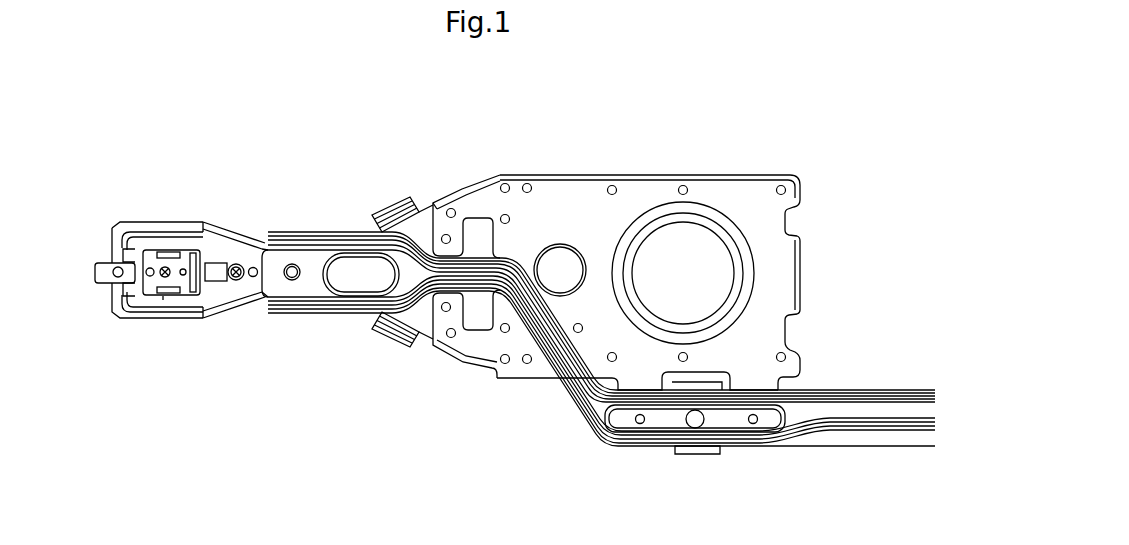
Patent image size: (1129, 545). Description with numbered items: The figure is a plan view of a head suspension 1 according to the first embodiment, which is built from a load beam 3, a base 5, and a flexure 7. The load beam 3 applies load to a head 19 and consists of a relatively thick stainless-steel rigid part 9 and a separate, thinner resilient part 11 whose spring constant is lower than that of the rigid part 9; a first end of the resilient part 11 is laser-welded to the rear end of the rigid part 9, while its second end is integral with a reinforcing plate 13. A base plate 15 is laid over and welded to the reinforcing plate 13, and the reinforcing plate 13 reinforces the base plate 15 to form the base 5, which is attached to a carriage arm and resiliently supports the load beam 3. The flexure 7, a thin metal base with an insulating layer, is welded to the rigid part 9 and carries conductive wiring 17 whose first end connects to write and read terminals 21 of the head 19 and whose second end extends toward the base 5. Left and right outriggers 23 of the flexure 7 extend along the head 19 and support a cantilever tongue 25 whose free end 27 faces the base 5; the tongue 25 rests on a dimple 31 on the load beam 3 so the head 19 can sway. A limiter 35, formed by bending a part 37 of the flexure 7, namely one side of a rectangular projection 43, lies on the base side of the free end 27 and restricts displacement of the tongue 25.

The head suspension 1 is at (436, 145).
The load beam 3 is at (313, 267).
The base 5 is at (586, 192).
The flexure 7 is at (261, 225).
The rigid part 9 is at (415, 196).
The resilient part 11 is at (473, 190).
The reinforcing plate 13 is at (747, 176).
The base plate 15 is at (707, 175).
The wiring 17 is at (195, 250).
The head 19 is at (158, 250).
The write and read terminals 21 is at (103, 252).
The outriggers 23 is at (135, 222).
The tongue 25 is at (172, 262).
The free end 27 is at (219, 233).
The dimple 31 is at (164, 300).
The limiter 35 is at (240, 232).
The part of the flexure 37 is at (251, 228).
The projection 43 is at (213, 300).